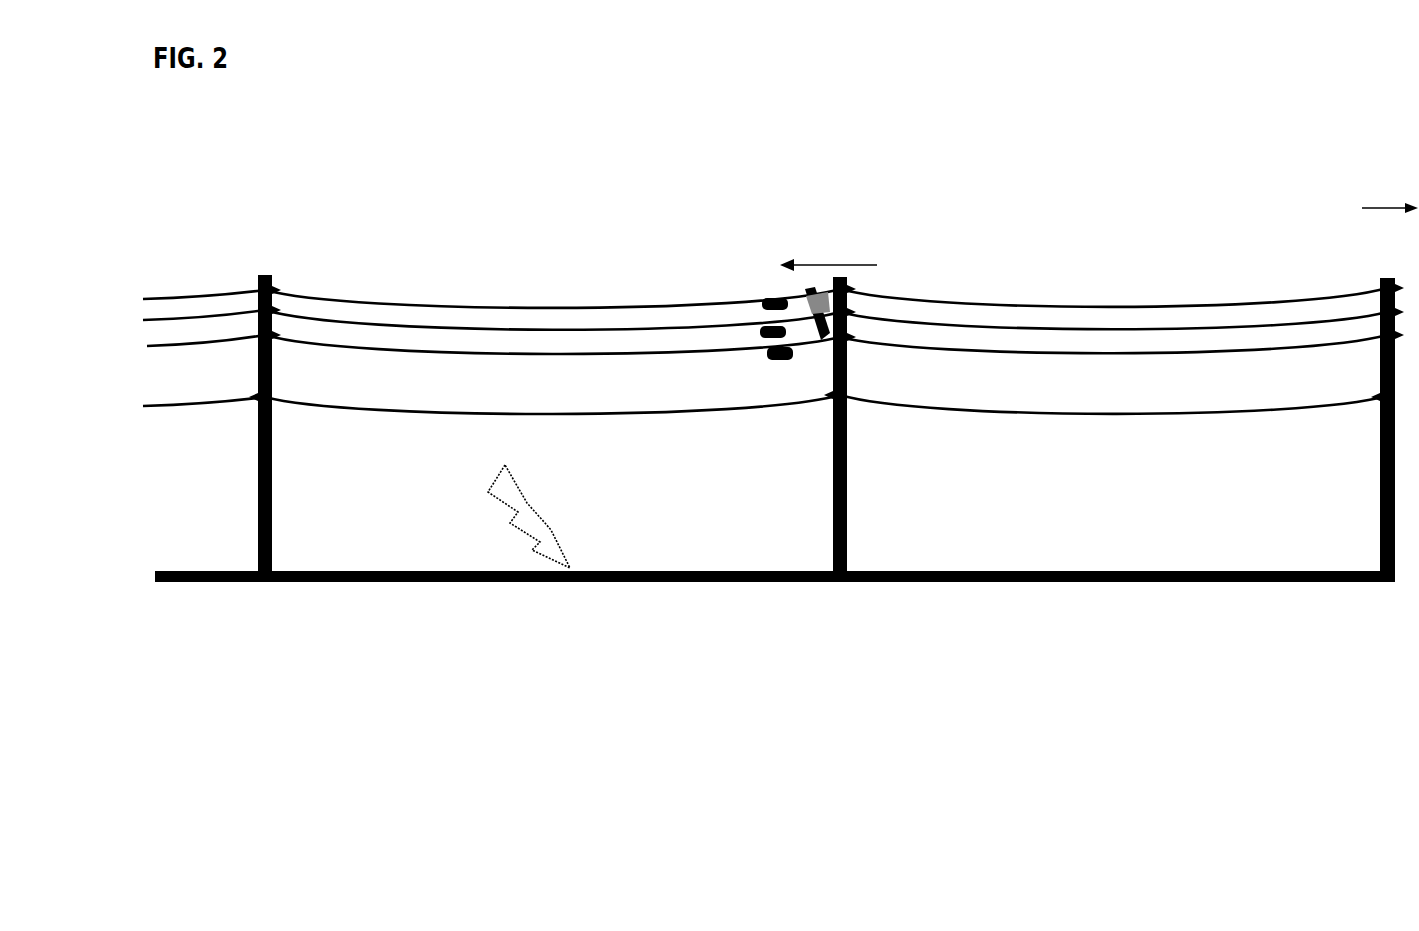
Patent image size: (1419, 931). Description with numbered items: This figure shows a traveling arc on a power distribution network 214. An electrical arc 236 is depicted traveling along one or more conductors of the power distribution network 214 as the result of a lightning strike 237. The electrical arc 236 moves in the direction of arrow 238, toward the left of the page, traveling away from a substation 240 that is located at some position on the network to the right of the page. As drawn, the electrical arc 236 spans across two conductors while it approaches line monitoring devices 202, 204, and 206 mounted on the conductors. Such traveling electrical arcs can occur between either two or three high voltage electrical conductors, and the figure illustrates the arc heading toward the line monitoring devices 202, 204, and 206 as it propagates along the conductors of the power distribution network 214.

The power distribution network 214 is at (272, 236).
The line monitoring device 202 is at (770, 288).
The line monitoring device 204 is at (752, 321).
The line monitoring device 206 is at (758, 366).
The electrical arc 236 is at (812, 352).
The lightning strike 237 is at (542, 518).
The arrow 238 is at (832, 262).
The substation 240 is at (1310, 218).